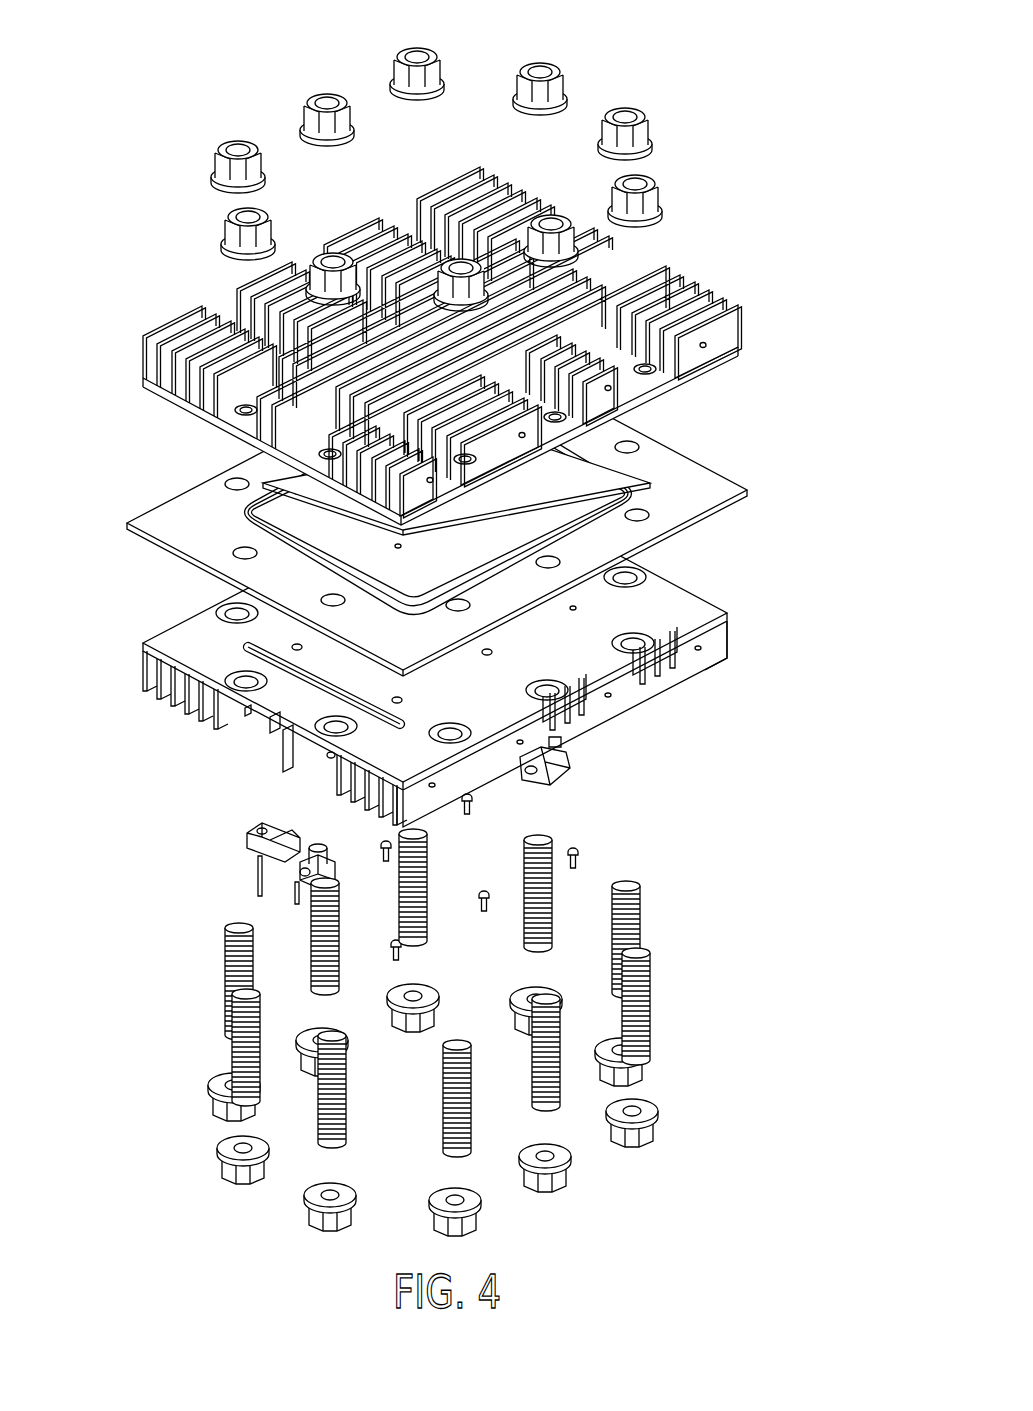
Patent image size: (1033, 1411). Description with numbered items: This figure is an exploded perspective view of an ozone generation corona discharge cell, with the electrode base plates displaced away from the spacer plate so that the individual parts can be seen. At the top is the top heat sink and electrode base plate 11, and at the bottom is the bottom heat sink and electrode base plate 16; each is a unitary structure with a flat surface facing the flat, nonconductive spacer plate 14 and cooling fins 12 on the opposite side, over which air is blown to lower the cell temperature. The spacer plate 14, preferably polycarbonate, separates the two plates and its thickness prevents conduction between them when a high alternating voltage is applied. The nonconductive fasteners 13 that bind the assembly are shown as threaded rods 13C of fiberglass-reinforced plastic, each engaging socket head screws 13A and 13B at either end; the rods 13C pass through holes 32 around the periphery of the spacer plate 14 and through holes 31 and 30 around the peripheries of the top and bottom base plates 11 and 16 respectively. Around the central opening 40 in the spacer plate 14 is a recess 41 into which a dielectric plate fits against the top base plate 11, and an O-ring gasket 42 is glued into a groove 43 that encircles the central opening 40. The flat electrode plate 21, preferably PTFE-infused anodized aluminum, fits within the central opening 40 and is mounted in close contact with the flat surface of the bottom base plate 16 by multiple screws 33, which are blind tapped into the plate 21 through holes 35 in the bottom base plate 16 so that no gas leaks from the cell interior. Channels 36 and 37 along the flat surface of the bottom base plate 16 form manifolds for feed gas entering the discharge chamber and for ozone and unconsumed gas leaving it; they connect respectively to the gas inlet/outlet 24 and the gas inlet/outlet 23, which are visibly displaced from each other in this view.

The top heat sink and electrode base plate 11 is at (726, 330).
The cooling fins 12 is at (178, 312).
The nonconductive fasteners 13 is at (660, 894).
The socket head screws 13A is at (272, 231).
The socket head screws 13B is at (617, 1138).
The threaded rods 13C is at (524, 922).
The spacer plate 14 is at (725, 486).
The bottom heat sink and electrode base plate 16 is at (329, 758).
The flat electrode plate 21 is at (652, 515).
The gas inlet/outlet 23 is at (570, 762).
The gas inlet/outlet 24 is at (335, 862).
The holes 30 is at (727, 660).
The holes 31 is at (556, 421).
The holes 32 is at (244, 712).
The screws 33 is at (572, 848).
The holes 35 is at (466, 812).
The channel 36 is at (283, 760).
The channel 37 is at (705, 658).
The central opening 40 is at (640, 521).
The recess 41 is at (748, 490).
The O-ring gasket 42 is at (228, 486).
The groove 43 is at (232, 612).